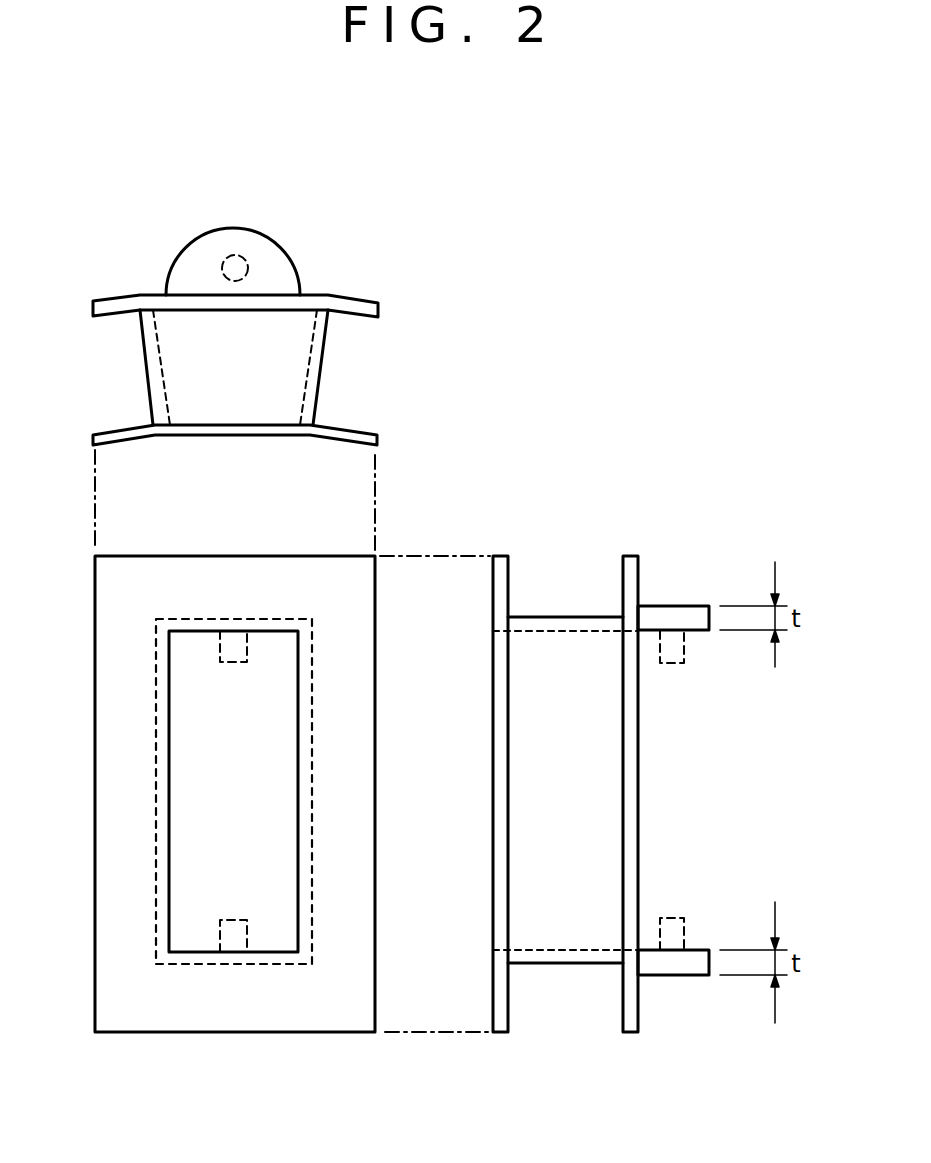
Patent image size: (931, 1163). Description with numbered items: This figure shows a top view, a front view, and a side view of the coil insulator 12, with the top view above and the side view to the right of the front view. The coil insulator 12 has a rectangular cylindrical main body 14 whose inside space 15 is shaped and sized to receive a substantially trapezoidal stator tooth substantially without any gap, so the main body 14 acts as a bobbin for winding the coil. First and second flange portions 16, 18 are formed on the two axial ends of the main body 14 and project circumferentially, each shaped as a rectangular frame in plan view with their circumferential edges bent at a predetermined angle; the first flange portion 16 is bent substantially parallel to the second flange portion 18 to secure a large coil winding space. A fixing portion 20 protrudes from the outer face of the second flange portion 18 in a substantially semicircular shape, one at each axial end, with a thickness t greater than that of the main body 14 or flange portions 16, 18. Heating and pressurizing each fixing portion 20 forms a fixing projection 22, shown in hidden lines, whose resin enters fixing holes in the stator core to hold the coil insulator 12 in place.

The coil insulator 12 is at (329, 290).
The main body 14 is at (325, 361).
The inside space 15 is at (221, 806).
The first flange portion 16 is at (347, 427).
The second flange portion 18 is at (363, 317).
The fixing portion 20 is at (227, 228).
The fixing projection 22 is at (220, 268).